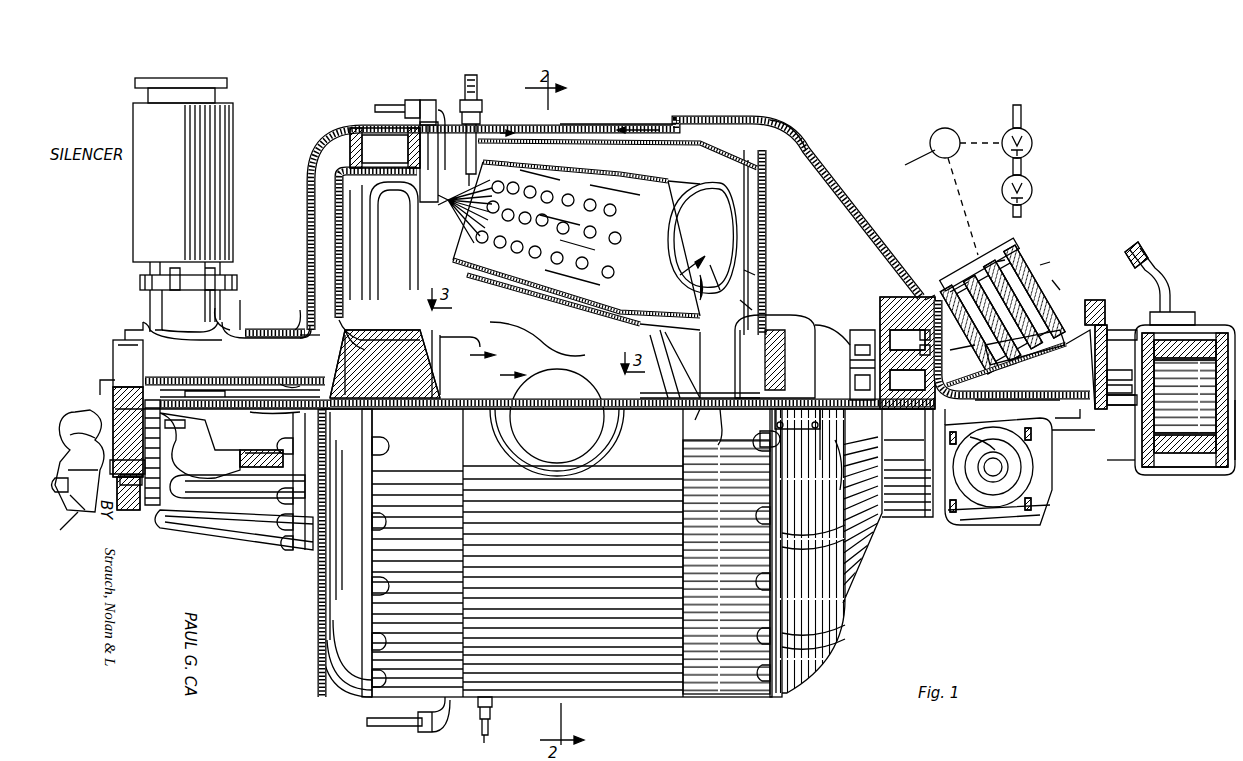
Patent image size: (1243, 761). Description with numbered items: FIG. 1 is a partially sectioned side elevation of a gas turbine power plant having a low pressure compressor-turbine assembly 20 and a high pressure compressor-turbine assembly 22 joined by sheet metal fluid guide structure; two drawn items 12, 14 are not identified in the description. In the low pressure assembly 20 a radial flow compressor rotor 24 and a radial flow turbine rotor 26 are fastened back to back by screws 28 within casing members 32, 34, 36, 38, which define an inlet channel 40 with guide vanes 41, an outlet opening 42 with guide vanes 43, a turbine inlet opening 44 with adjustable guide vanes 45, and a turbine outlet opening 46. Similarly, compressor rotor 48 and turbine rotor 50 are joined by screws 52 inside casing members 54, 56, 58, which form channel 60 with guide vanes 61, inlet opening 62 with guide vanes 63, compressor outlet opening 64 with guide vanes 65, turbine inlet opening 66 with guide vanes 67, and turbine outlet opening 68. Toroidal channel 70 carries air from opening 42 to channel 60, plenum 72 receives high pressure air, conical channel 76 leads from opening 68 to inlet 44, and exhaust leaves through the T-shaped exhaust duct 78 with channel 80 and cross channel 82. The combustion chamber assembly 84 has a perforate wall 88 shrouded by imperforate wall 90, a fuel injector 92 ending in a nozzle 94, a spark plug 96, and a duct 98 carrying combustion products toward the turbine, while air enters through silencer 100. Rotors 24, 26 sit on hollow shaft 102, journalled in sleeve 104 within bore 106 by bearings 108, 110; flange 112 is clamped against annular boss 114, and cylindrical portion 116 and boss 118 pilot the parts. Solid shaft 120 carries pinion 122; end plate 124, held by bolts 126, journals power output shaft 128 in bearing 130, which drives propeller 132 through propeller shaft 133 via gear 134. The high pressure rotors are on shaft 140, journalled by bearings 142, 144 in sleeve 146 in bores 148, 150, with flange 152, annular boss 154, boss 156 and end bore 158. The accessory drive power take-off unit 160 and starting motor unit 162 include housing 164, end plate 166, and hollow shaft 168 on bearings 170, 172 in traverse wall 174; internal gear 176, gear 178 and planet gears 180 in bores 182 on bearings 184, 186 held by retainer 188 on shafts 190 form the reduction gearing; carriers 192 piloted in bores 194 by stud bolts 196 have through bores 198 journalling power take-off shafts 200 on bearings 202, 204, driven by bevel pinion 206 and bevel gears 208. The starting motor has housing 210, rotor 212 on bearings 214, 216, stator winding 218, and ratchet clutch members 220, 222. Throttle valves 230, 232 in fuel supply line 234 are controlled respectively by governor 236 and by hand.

The engine housing 12 is at (525, 553).
The combustion chamber dome 14 is at (712, 190).
The low pressure compressor-turbine assembly 20 is at (308, 310).
The high pressure compressor-turbine assembly 22 is at (778, 313).
The radial flow compressor rotor 24 is at (298, 322).
The radial flow turbine rotor 26 is at (452, 334).
The screws 28 is at (370, 385).
The casing member 32 is at (248, 325).
The casing member 34 is at (308, 190).
The casing member 36 is at (378, 222).
The casing member 38 is at (362, 337).
The low pressure compressor inlet channel 40 is at (222, 312).
The guide vanes 41 is at (245, 305).
The peripheral outlet opening 42 is at (305, 292).
The guide vanes 43 is at (308, 168).
The turbine inlet opening 44 is at (378, 296).
The adjustable guide vanes 45 is at (378, 238).
The turbine outlet opening 46 is at (432, 340).
The radial flow compressor rotor 48 is at (810, 348).
The radial flow turbine rotor 50 is at (700, 380).
The screws 52 is at (710, 390).
The casing member 54 is at (868, 248).
The casing member 56 is at (752, 300).
The casing member 58 is at (700, 330).
The radially extending channel 60 is at (850, 240).
The guide vanes 61 is at (790, 145).
The high pressure compressor rotor inlet opening 62 is at (838, 345).
The guide vanes 63 is at (812, 335).
The compressor outlet opening 64 is at (768, 240).
The guide vanes 65 is at (766, 280).
The high pressure turbine rotor inlet opening 66 is at (696, 305).
The guide vanes 67 is at (703, 265).
The high pressure turbine outlet opening 68 is at (670, 352).
The toroidal channel 70 is at (575, 120).
The plenum 72 is at (694, 178).
The conically shaped channel 76 is at (628, 300).
The T-shaped exhaust duct 78 is at (548, 360).
The channel 80 is at (510, 340).
The cross channel 82 is at (526, 389).
The combustion chamber assembly 84 is at (632, 164).
The perforate wall 88 is at (375, 255).
The imperforate wall 90 is at (556, 152).
The fuel injector 92 is at (428, 100).
The nozzle 94 is at (420, 200).
The fuel ignition means 96 is at (482, 105).
The duct 98 is at (650, 178).
The silencer 100 is at (140, 176).
The hollow shaft 102 is at (258, 428).
The sleeve 104 is at (195, 372).
The through bore 106 is at (245, 382).
The anti-friction bearing 108 is at (208, 408).
The anti-friction bearing 110 is at (265, 410).
The radially extending flange 112 is at (350, 377).
The annular boss 114 is at (305, 380).
The reversely directed cylindrical portion 116 is at (318, 352).
The boss 118 is at (380, 404).
The solid shaft 120 is at (196, 432).
The pinion 122 is at (118, 404).
The end plate 124 is at (112, 345).
The bolts 126 is at (130, 313).
The power output shaft 128 is at (78, 461).
The anti-friction bearing 130 is at (160, 470).
The propeller 132 is at (75, 405).
The propeller shaft 133 is at (88, 505).
The gear 134 is at (160, 465).
The shaft 140 is at (842, 457).
The anti-friction bearing 142 is at (858, 420).
The anti-friction bearing 144 is at (967, 353).
The sleeve 146 is at (915, 435).
The bore 148 is at (855, 374).
The bore 150 is at (857, 355).
The radially extending flange 152 is at (704, 418).
The annular boss 154 is at (724, 440).
The boss 156 is at (705, 427).
The end bore 158 is at (775, 440).
The accessory drive power take-off unit 160 is at (1070, 274).
The starting motor unit 162 is at (1176, 486).
The housing 164 is at (1050, 500).
The end plate 166 is at (1120, 326).
The hollow shaft 168 is at (990, 410).
The bearing 170 is at (960, 452).
The bearing 172 is at (1075, 408).
The traverse wall 174 is at (978, 280).
The internal annular gear 176 is at (930, 280).
The gear 178 is at (903, 431).
The planet gears 180 is at (903, 448).
The bores 182 is at (907, 353).
The anti-friction bearing 184 is at (859, 341).
The anti-friction bearing 186 is at (925, 300).
The retainer 188 is at (910, 318).
The shaft 190 is at (862, 356).
The power take-off shaft carriers 192 is at (1000, 525).
The bores 194 is at (1045, 268).
The stud bolts 196 is at (1032, 455).
The through bore 198 is at (1055, 295).
The hollow power take-off shaft 200 is at (1000, 468).
The anti-friction bearing 202 is at (1020, 265).
The anti-friction bearing 204 is at (1035, 362).
The bevel pinion 206 is at (998, 382).
The bevel gears 208 is at (1086, 328).
The housing 210 is at (1200, 318).
The rotor 212 is at (1175, 445).
The anti-friction bearing 214 is at (1120, 478).
The anti-friction bearing 216 is at (1230, 470).
The stator winding 218 is at (1160, 478).
The clutch member 220 is at (1100, 425).
The clutch member 222 is at (1105, 440).
The throttle valve 230 is at (1033, 140).
The throttle valve 232 is at (1033, 185).
The fuel supply line 234 is at (385, 105).
The governor 236 is at (945, 132).